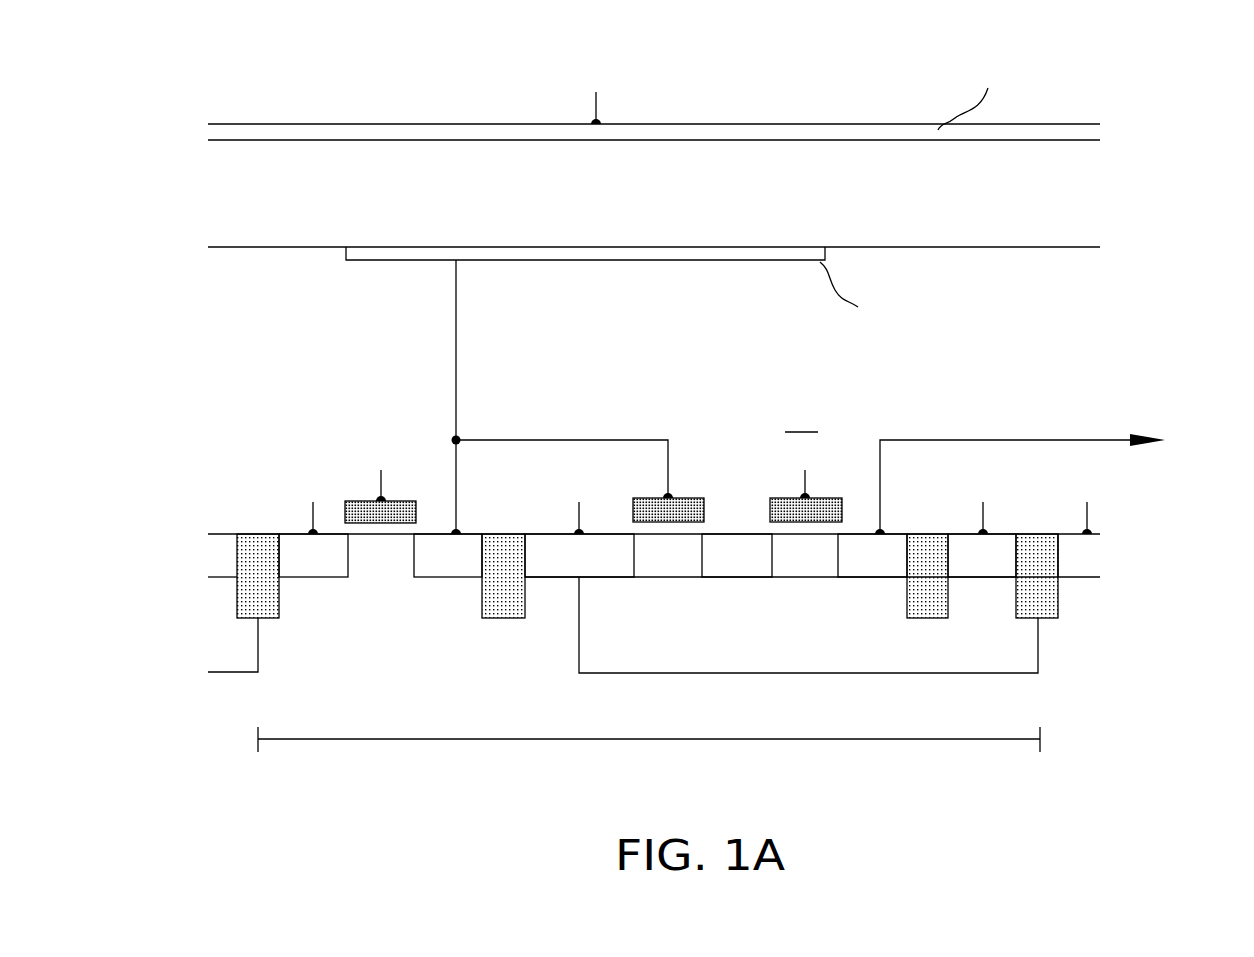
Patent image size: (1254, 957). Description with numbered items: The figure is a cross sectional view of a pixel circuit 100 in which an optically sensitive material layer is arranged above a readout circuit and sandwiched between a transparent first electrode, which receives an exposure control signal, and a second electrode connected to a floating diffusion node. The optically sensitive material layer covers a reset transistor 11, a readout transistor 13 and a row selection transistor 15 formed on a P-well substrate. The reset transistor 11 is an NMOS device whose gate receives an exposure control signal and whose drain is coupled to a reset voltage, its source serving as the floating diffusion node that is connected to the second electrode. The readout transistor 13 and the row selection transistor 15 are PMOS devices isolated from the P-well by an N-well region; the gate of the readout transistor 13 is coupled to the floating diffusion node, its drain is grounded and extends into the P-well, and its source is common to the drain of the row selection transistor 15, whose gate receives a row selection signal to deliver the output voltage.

The pixel circuit 100 is at (173, 103).
The reset transistor 11 is at (345, 432).
The readout transistor 13 is at (682, 448).
The row selection transistor 15 is at (773, 448).